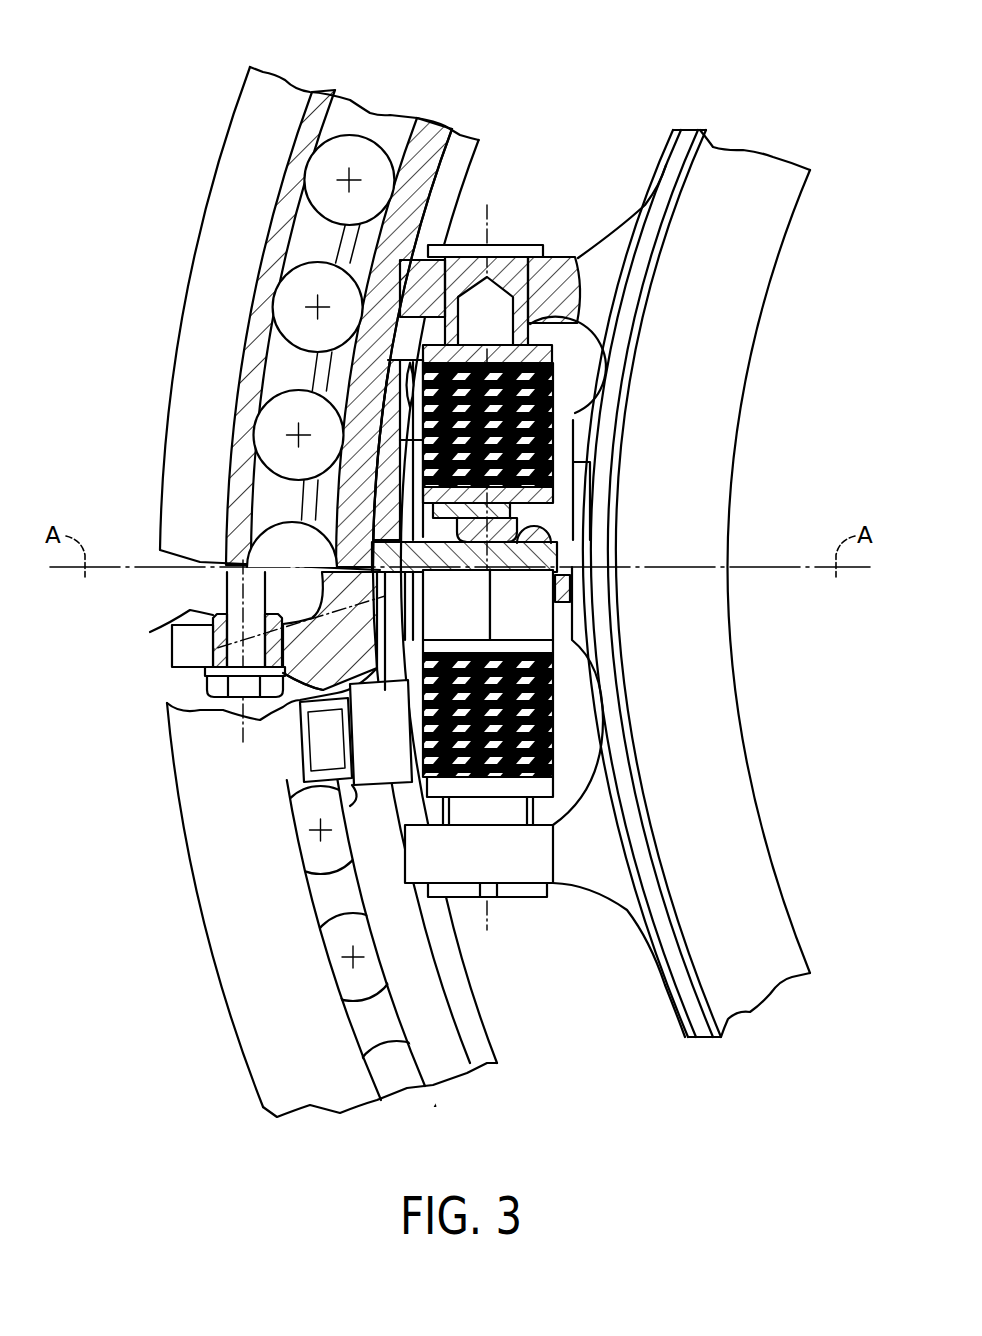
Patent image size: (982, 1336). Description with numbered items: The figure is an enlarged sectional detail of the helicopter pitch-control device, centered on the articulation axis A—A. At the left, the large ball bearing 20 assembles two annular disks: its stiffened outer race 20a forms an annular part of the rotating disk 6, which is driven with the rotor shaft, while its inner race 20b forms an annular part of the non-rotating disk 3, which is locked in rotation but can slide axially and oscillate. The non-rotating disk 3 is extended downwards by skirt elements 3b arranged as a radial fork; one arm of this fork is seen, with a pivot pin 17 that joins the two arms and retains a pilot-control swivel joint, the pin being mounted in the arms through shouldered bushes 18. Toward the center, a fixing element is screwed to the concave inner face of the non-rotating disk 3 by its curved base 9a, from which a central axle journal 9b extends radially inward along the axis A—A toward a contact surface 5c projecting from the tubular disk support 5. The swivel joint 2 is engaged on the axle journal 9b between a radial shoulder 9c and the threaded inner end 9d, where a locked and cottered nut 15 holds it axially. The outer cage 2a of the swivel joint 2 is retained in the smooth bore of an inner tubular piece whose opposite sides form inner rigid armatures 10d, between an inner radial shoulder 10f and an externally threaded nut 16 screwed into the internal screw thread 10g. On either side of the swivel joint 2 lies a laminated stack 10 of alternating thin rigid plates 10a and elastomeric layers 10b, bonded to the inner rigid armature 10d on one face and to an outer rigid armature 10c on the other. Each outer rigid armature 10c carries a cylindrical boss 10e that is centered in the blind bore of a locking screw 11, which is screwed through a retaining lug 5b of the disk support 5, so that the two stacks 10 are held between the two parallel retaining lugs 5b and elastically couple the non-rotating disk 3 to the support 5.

The swivel joint 2 is at (517, 528).
The outer cage 2a is at (545, 522).
The non-rotating disk 3 is at (315, 596).
The skirt elements 3b is at (172, 653).
The disk support 5 is at (596, 248).
The retaining lugs 5b is at (532, 245).
The contact surface 5c is at (560, 550).
The rotating disk 6 is at (230, 915).
The curved base 9a is at (393, 387).
The axle journal 9b is at (450, 575).
The radial shoulder 9c is at (420, 576).
The externally threaded inner radial end 9d is at (570, 585).
The laminated stack 10 is at (566, 406).
The thin plates 10a is at (560, 352).
The elastic layers 10b is at (556, 368).
The outer rigid armature 10c is at (560, 325).
The inner rigid armature 10d is at (421, 643).
The cylindrical boss 10e is at (587, 277).
The inner radial shoulder 10f is at (545, 508).
The internal screw thread 10g is at (420, 520).
The locking screw 11 is at (450, 243).
The locked and cottered nut 15 is at (530, 575).
The externally threaded nut 16 is at (435, 503).
The pivot pin 17 is at (225, 590).
The shouldered bushes 18 is at (175, 625).
The ball bearing 20 is at (297, 292).
The outer race 20a is at (303, 107).
The inner race 20b is at (427, 137).